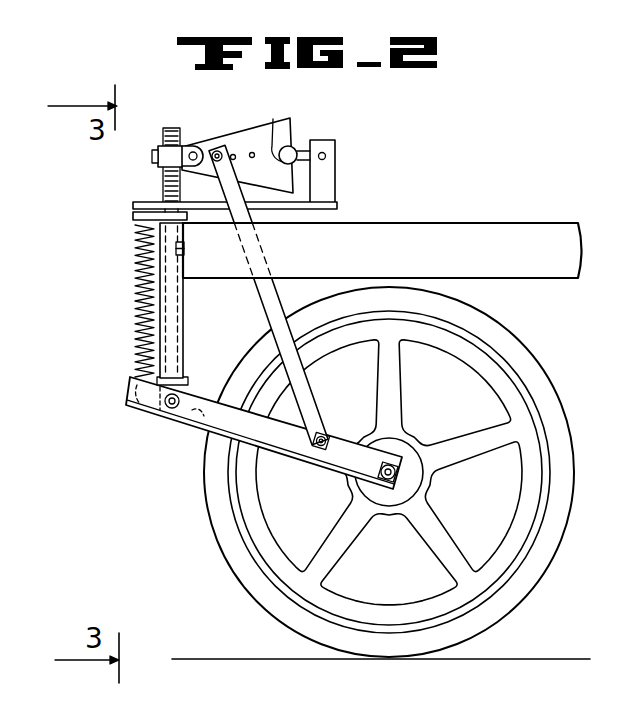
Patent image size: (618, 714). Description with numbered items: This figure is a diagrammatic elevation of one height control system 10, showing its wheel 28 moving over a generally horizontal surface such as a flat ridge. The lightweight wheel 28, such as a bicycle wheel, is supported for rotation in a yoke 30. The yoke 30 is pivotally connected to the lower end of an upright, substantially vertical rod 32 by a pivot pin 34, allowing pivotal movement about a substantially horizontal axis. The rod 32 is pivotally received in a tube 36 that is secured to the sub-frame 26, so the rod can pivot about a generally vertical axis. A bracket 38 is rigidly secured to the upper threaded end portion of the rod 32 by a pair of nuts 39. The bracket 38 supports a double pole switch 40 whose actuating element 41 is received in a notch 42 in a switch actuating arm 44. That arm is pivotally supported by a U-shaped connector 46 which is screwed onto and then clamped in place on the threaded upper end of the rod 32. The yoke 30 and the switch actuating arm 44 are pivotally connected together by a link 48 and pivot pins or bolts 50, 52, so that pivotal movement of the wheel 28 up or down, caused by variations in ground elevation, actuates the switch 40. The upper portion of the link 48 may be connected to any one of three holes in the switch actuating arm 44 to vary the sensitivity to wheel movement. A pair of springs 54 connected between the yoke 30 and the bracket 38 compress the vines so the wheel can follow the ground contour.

The height control system 10 is at (372, 170).
The sub-frame 26 is at (519, 222).
The wheel 28 is at (213, 506).
The yoke 30 is at (215, 435).
The rod 32 is at (163, 187).
The pivot pin 34 is at (157, 417).
The tube 36 is at (163, 315).
The bracket 38 is at (335, 206).
The nuts 39 is at (133, 201).
The double pole switch 40 is at (337, 139).
The actuating element 41 is at (296, 124).
The notch 42 is at (272, 138).
The switch actuating arm 44 is at (218, 140).
The U-shaped connector 46 is at (152, 157).
The link 48 is at (283, 300).
The pivot pin or bolt 50 is at (216, 150).
The pivot pin or bolt 52 is at (324, 436).
The springs 54 is at (138, 297).